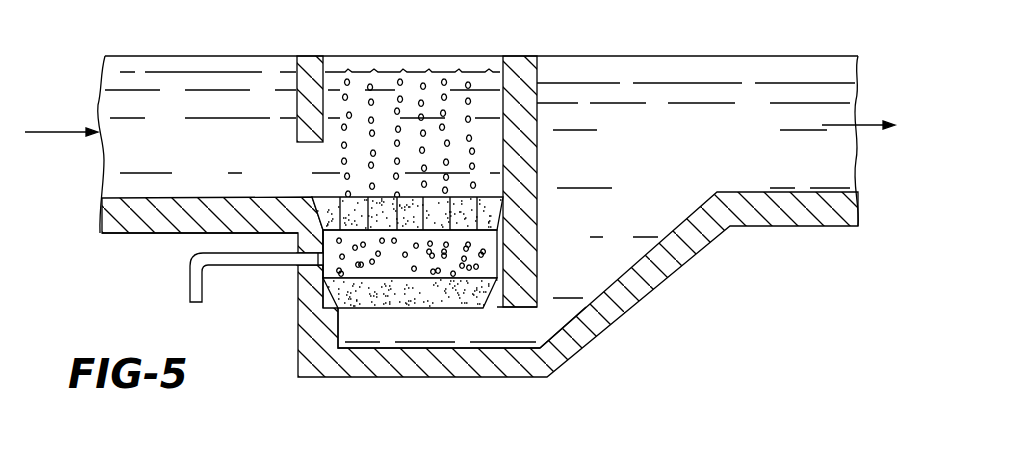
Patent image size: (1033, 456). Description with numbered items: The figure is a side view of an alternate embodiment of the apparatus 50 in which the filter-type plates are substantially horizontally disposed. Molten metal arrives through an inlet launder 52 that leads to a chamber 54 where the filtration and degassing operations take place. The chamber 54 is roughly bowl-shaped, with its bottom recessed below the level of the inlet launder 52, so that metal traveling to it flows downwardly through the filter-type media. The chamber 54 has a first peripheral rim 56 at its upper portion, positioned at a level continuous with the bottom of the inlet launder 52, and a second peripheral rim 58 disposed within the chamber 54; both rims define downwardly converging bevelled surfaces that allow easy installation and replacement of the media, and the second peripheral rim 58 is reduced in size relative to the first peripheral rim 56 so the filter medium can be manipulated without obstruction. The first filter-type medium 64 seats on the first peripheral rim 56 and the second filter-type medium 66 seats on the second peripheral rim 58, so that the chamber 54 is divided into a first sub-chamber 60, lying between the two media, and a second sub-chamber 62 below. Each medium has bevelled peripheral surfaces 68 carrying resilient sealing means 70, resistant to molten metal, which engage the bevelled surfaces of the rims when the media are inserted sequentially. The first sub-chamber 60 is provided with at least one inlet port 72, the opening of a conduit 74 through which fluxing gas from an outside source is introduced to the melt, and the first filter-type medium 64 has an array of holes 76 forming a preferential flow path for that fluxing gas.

The apparatus 50 is at (483, 43).
The inlet launder 52 is at (182, 150).
The chamber 54 is at (345, 345).
The first peripheral rim 56 is at (306, 222).
The second peripheral rim 58 is at (328, 293).
The first sub-chamber 60 is at (474, 256).
The second sub-chamber 62 is at (453, 330).
The first filter-type medium 64 is at (504, 195).
The second filter-type medium 66 is at (404, 312).
The bevelled peripheral surfaces 68 is at (546, 299).
The resilient sealing means 70 is at (341, 212).
The inlet port 72 is at (306, 271).
The conduit 74 is at (188, 288).
The array of holes 76 is at (347, 195).